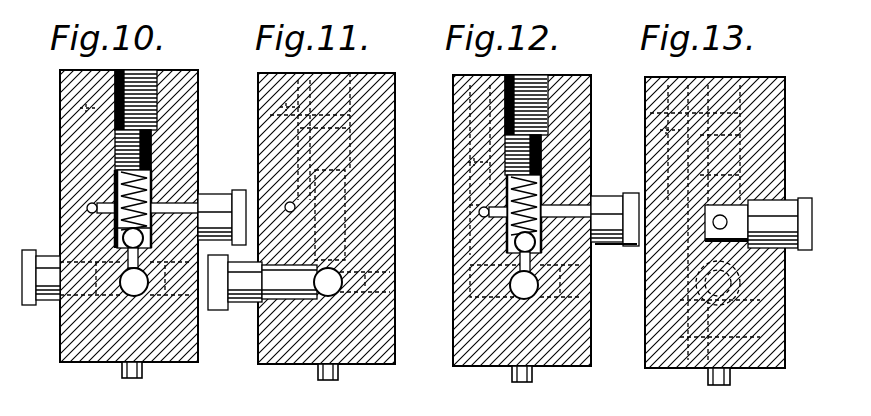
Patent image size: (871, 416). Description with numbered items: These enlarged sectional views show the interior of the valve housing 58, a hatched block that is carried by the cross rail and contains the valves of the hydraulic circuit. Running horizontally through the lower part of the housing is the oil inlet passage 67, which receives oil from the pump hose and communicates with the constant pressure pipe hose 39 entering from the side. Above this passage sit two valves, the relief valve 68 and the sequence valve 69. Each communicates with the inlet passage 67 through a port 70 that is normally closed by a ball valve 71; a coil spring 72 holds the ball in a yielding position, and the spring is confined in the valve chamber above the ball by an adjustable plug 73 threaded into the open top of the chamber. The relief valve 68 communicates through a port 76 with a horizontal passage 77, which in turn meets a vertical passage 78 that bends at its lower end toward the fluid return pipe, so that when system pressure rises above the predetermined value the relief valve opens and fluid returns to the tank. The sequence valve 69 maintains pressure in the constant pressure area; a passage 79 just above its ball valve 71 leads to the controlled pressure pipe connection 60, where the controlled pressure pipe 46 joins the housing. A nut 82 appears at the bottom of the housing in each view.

In FIG. 10, the pipe hose 39 is at (43, 256).
In FIG. 11, the pipe hose 39 is at (238, 312).
In FIG. 10, the controlled pressure pipe 46 is at (238, 192).
In FIG. 12, the controlled pressure pipe 46 is at (628, 248).
In FIG. 11, the valve housing 58 is at (388, 338).
In FIG. 12, the valve housing 58 is at (562, 362).
In FIG. 13, the valve housing 58 is at (766, 364).
In FIG. 12, the controlled pressure pipe connection 60 is at (608, 198).
In FIG. 13, the controlled pressure pipe connection 60 is at (800, 200).
In FIG. 10, the oil inlet passage 67 is at (134, 296).
In FIG. 11, the oil inlet passage 67 is at (336, 290).
In FIG. 12, the oil inlet passage 67 is at (509, 285).
In FIG. 10, the relief valve 68 is at (112, 192).
In FIG. 12, the sequence valve 69 is at (479, 213).
In FIG. 10, the port 70 is at (139, 262).
In FIG. 10, the ball valve 71 is at (143, 240).
In FIG. 12, the ball valve 71 is at (514, 243).
In FIG. 10, the coil spring 72 is at (155, 197).
In FIG. 12, the coil spring 72 is at (545, 195).
In FIG. 10, the adjustable plug 73 is at (150, 135).
In FIG. 12, the adjustable plug 73 is at (548, 142).
In FIG. 10, the port 76 is at (126, 224).
In FIG. 10, the horizontal passage 77 is at (87, 207).
In FIG. 11, the horizontal passage 77 is at (330, 172).
In FIG. 12, the horizontal passage 77 is at (475, 206).
In FIG. 10, the vertical passage 78 is at (82, 113).
In FIG. 11, the vertical passage 78 is at (290, 110).
In FIG. 12, the vertical passage 78 is at (462, 162).
In FIG. 13, the vertical passage 78 is at (652, 130).
In FIG. 12, the passage 79 is at (556, 208).
In FIG. 13, the passage 79 is at (735, 203).
In FIG. 10, the nut 82 is at (142, 371).
In FIG. 11, the nut 82 is at (340, 372).
In FIG. 12, the nut 82 is at (515, 376).
In FIG. 13, the nut 82 is at (712, 380).